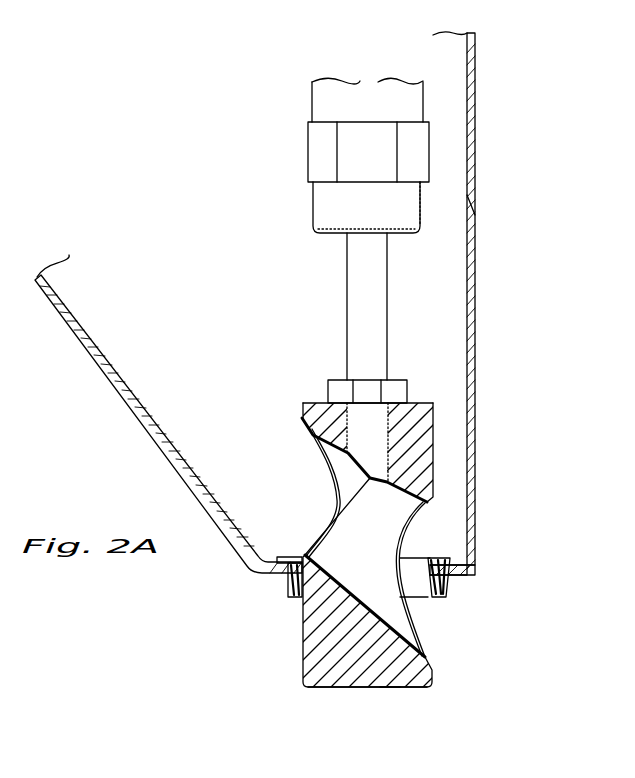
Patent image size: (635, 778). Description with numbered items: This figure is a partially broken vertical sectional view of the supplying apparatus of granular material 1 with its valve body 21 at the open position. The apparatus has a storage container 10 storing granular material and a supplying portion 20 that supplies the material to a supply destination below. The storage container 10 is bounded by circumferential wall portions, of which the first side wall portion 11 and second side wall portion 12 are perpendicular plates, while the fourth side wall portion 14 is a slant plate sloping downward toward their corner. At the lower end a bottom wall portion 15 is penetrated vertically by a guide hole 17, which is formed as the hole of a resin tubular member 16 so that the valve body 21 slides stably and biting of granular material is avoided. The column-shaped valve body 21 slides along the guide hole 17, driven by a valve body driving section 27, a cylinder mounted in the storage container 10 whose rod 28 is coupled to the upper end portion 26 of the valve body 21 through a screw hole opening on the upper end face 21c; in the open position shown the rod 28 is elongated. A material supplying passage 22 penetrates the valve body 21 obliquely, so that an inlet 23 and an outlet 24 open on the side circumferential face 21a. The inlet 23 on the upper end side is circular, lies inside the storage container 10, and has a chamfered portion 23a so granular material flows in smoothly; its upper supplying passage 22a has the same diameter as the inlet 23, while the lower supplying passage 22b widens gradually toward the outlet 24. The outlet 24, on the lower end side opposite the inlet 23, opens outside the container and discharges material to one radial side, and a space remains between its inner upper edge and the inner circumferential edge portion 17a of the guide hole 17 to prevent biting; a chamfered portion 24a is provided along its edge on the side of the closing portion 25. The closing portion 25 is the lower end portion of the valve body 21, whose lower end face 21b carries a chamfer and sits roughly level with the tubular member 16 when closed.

The supplying apparatus of granular material 1 is at (62, 408).
The storage container 10 is at (153, 447).
The supplying portion 20 is at (162, 402).
The first side wall portion 11 is at (453, 205).
The second side wall portion 12 is at (477, 171).
The fourth side wall portion 14 is at (57, 303).
The bottom wall portion 15 is at (270, 572).
The tubular member 16 is at (290, 597).
The guide hole 17 is at (432, 598).
The inner circumferential edge portion of the guide hole 17a is at (423, 558).
The valve body 21 is at (339, 547).
The side circumferential face 21a is at (303, 647).
The lower end face 21b is at (343, 688).
The upper end face 21c is at (413, 403).
The material supplying passage 22 is at (397, 543).
The upper supplying passage 22a is at (318, 447).
The lower supplying passage 22b is at (427, 511).
The inlet 23 is at (314, 516).
The chamfered portion of the inlet 23a is at (307, 553).
The outlet 24 is at (423, 615).
The chamfered portion of the outlet 24a is at (425, 657).
The closing portion 25 is at (390, 687).
The upper end portion 26 is at (303, 410).
The valve body driving section 27 is at (290, 100).
The rod 28 is at (357, 292).